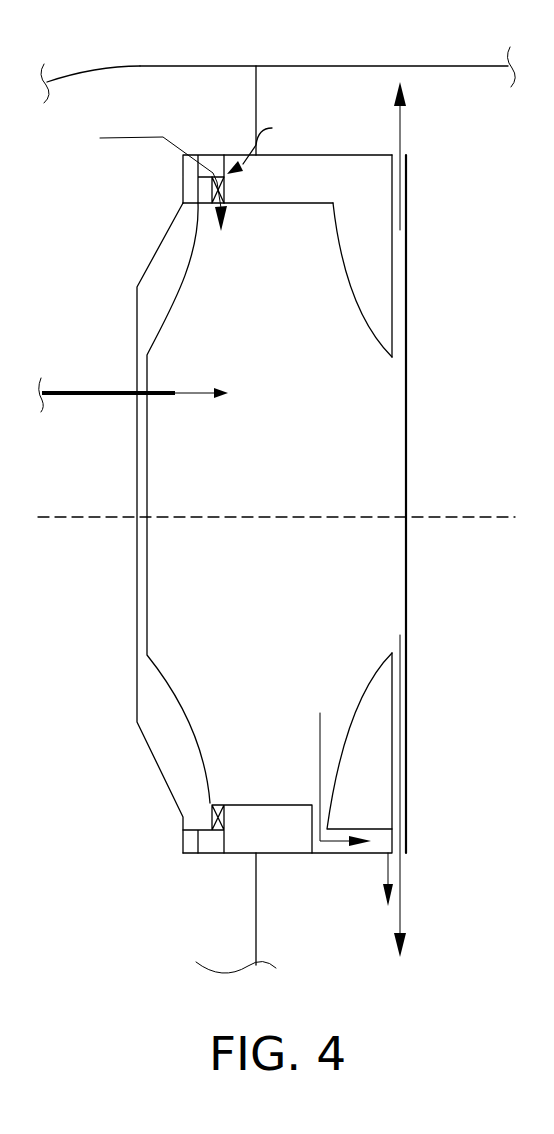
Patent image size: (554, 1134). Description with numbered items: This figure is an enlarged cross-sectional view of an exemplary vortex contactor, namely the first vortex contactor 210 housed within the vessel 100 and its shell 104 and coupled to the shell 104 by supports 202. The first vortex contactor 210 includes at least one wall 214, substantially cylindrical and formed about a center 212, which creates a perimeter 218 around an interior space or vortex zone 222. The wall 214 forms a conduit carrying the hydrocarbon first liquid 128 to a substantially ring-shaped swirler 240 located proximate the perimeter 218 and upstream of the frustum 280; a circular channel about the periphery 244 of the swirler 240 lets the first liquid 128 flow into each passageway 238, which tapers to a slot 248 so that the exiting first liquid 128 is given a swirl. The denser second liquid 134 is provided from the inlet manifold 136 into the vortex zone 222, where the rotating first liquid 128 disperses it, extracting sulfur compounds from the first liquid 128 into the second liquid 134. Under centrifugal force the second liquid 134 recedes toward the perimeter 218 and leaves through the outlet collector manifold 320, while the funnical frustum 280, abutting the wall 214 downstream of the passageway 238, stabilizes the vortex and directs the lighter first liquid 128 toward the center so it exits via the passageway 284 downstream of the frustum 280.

The vessel 100 is at (143, 66).
The shell 104 is at (76, 73).
The first liquid 128 is at (403, 127).
The second liquid 134 is at (192, 390).
The inlet manifold 136 is at (96, 390).
The supports 202 is at (262, 90).
The first vortex contactor 210 is at (408, 471).
The center 212 is at (454, 520).
The wall 214 is at (200, 154).
The perimeter 218 is at (287, 205).
The vortex zone 222 is at (300, 481).
The passageway 238 is at (210, 175).
The swirler 240 is at (272, 128).
The periphery 244 is at (205, 856).
The slot 248 is at (196, 202).
The frustum 280 is at (388, 217).
The passageway 284 is at (403, 290).
The outlet collector manifold 320 is at (388, 875).